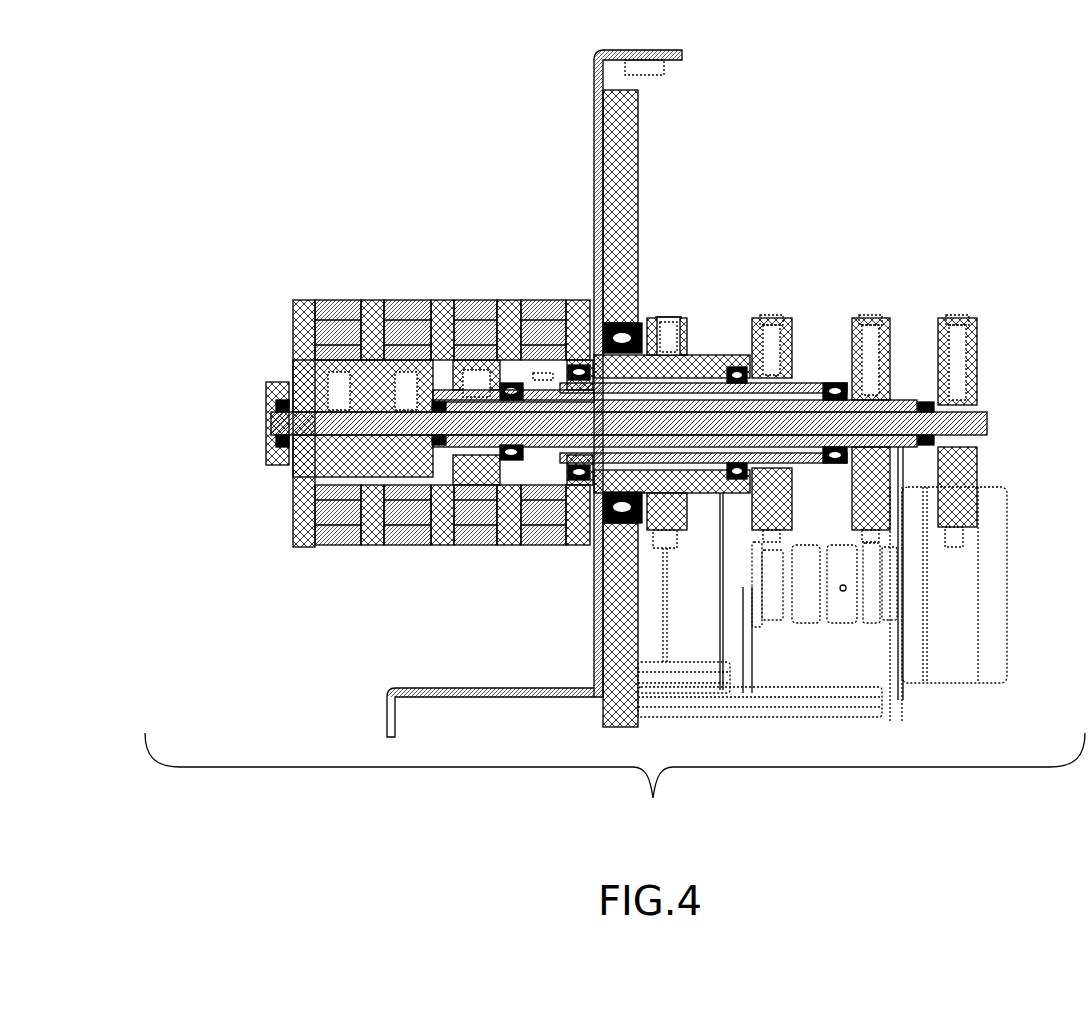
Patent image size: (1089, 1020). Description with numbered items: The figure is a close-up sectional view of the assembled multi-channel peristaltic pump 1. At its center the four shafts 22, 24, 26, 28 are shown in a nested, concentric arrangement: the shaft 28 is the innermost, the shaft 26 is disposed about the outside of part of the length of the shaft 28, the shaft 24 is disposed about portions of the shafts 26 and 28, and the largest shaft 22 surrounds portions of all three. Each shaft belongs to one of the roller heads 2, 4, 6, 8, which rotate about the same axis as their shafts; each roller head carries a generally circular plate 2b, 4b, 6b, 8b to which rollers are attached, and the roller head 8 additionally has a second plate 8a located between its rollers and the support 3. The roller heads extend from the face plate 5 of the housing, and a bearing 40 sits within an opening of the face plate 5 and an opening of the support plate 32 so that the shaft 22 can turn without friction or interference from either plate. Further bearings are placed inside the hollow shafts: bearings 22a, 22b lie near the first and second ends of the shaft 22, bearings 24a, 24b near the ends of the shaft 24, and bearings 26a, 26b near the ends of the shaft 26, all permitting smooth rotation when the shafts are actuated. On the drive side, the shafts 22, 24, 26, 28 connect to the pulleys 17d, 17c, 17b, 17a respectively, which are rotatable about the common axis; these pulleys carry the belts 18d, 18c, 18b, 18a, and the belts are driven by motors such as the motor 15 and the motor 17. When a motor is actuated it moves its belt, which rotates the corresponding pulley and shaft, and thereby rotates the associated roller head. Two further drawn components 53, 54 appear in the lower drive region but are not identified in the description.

The multi-channel peristaltic pump 1 is at (615, 781).
The roller head 2 is at (550, 537).
The plate 2b is at (580, 537).
The support 3 is at (283, 393).
The roller head 4 is at (477, 537).
The plate 4b is at (508, 537).
The face plate 5 is at (600, 180).
The roller head 6 is at (407, 537).
The plate 6b is at (442, 537).
The roller head 8 is at (338, 537).
The second plate 8a is at (303, 537).
The plate 8b is at (373, 537).
The motor 15 is at (952, 620).
The motor 17 is at (698, 627).
The pulley 17a is at (960, 508).
The pulley 17b is at (872, 508).
The pulley 17c is at (773, 508).
The pulley 17d is at (663, 513).
The belt 18a is at (957, 320).
The belt 18b is at (872, 615).
The belt 18c is at (775, 613).
The belt 18d is at (692, 367).
The shaft 22 is at (742, 368).
The bearing 22a is at (807, 383).
The bearing 22b is at (568, 317).
The shaft 24 is at (843, 385).
The bearing 24a is at (853, 318).
The bearing 24b is at (500, 318).
The shaft 26 is at (897, 407).
The bearing 26a is at (925, 403).
The bearing 26b is at (403, 318).
The shaft 28 is at (980, 417).
The support plate 32 is at (627, 185).
The bearing 40 is at (668, 318).
The bar 53 is at (663, 677).
The bar 54 is at (833, 700).